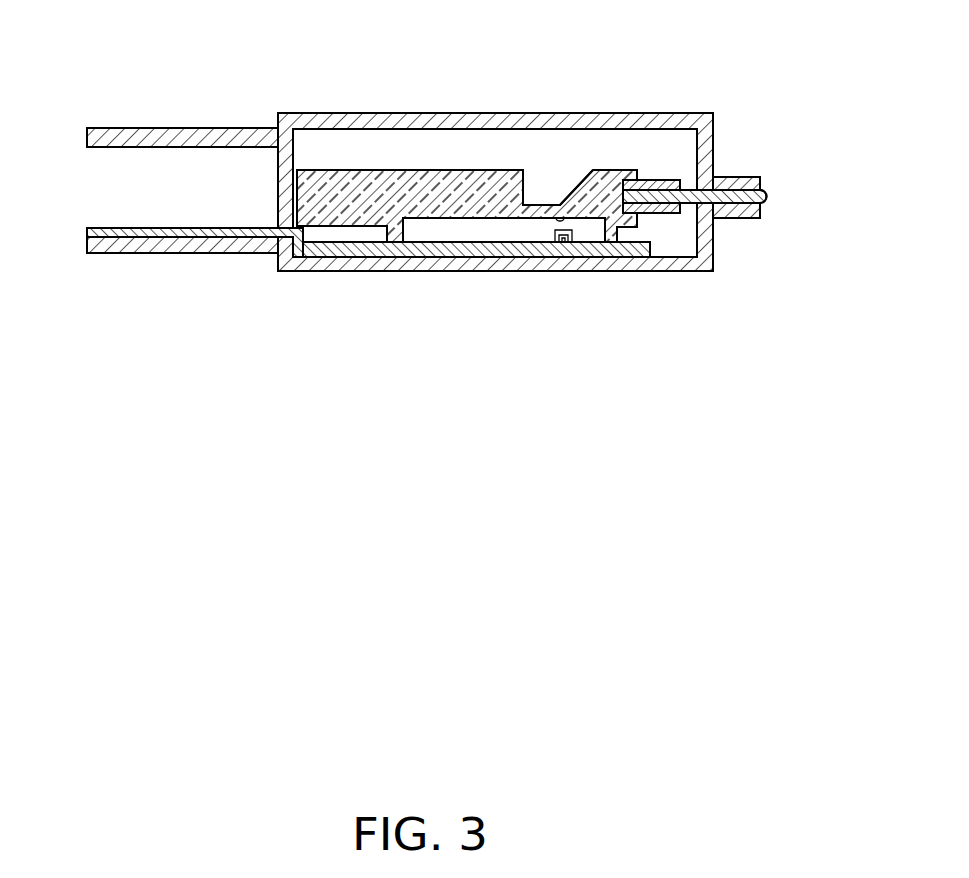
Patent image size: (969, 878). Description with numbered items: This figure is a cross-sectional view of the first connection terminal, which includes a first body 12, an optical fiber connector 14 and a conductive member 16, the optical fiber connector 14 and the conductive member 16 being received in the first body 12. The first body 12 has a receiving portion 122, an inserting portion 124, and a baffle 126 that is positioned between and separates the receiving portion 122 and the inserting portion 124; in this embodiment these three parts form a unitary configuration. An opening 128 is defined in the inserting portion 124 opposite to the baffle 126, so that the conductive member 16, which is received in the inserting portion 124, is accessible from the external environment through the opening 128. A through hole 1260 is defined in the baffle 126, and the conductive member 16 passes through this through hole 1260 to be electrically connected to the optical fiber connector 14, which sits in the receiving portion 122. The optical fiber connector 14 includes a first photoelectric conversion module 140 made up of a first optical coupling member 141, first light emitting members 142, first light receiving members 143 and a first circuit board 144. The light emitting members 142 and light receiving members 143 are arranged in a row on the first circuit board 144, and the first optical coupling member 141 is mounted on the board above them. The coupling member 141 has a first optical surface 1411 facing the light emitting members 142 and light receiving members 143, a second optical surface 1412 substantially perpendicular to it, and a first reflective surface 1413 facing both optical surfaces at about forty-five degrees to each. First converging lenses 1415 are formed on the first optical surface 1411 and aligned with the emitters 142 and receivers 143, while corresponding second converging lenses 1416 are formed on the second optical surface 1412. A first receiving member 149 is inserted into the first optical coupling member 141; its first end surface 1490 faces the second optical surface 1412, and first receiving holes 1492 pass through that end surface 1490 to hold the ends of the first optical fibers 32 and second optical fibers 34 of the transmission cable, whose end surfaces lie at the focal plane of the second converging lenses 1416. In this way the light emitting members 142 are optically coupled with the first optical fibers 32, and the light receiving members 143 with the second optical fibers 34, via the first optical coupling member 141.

The first body 12 is at (458, 118).
The receiving portion 122 is at (353, 122).
The inserting portion 124 is at (147, 137).
The baffle 126 is at (282, 178).
The through hole 1260 is at (290, 236).
The opening 128 is at (108, 212).
The conductive member 16 is at (88, 232).
The optical fiber connector 14 is at (552, 187).
The first photoelectric conversion module 140 is at (408, 152).
The first optical coupling member 141 is at (507, 180).
The first optical surface 1411 is at (447, 232).
The second optical surface 1412 is at (632, 170).
The first reflective surface 1413 is at (572, 183).
The first converging lens 1415 is at (562, 219).
The second converging lens 1416 is at (652, 182).
The first light emitting member 142 is at (558, 248).
The first light receiving member 143 is at (555, 230).
The first circuit board 144 is at (382, 240).
The first receiving member 149 is at (715, 125).
The first end surface 1490 is at (617, 223).
The first receiving hole 1492 is at (676, 195).
The first optical fiber 32 is at (766, 205).
The second optical fiber 34 is at (736, 197).